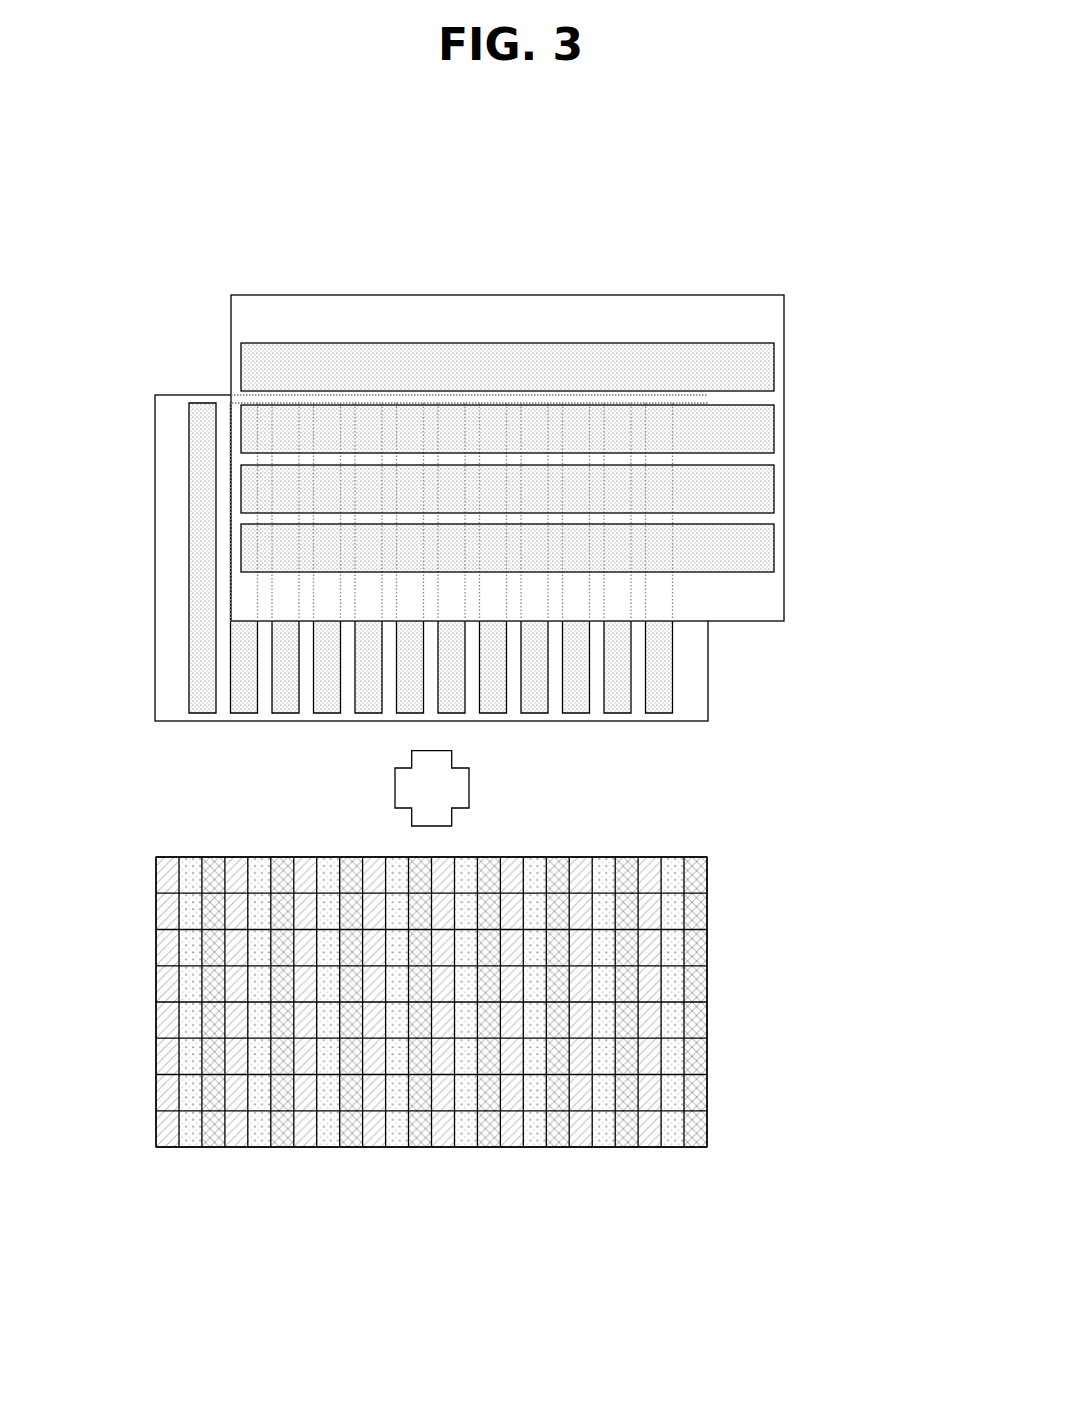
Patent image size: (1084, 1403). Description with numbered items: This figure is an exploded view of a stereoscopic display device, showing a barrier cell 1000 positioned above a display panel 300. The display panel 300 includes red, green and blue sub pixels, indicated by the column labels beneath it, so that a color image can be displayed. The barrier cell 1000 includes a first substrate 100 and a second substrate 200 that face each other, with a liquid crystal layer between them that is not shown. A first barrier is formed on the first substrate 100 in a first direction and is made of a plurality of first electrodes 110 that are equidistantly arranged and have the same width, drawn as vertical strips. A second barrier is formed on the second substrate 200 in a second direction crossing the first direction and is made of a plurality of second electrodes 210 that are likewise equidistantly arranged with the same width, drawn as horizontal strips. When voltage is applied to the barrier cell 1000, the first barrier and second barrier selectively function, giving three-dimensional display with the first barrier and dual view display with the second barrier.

The barrier cell 1000 is at (654, 252).
The first substrate 100 is at (472, 558).
The first electrodes 110 is at (665, 690).
The second substrate 200 is at (547, 458).
The second electrodes 210 is at (768, 370).
The display panel 300 is at (713, 903).